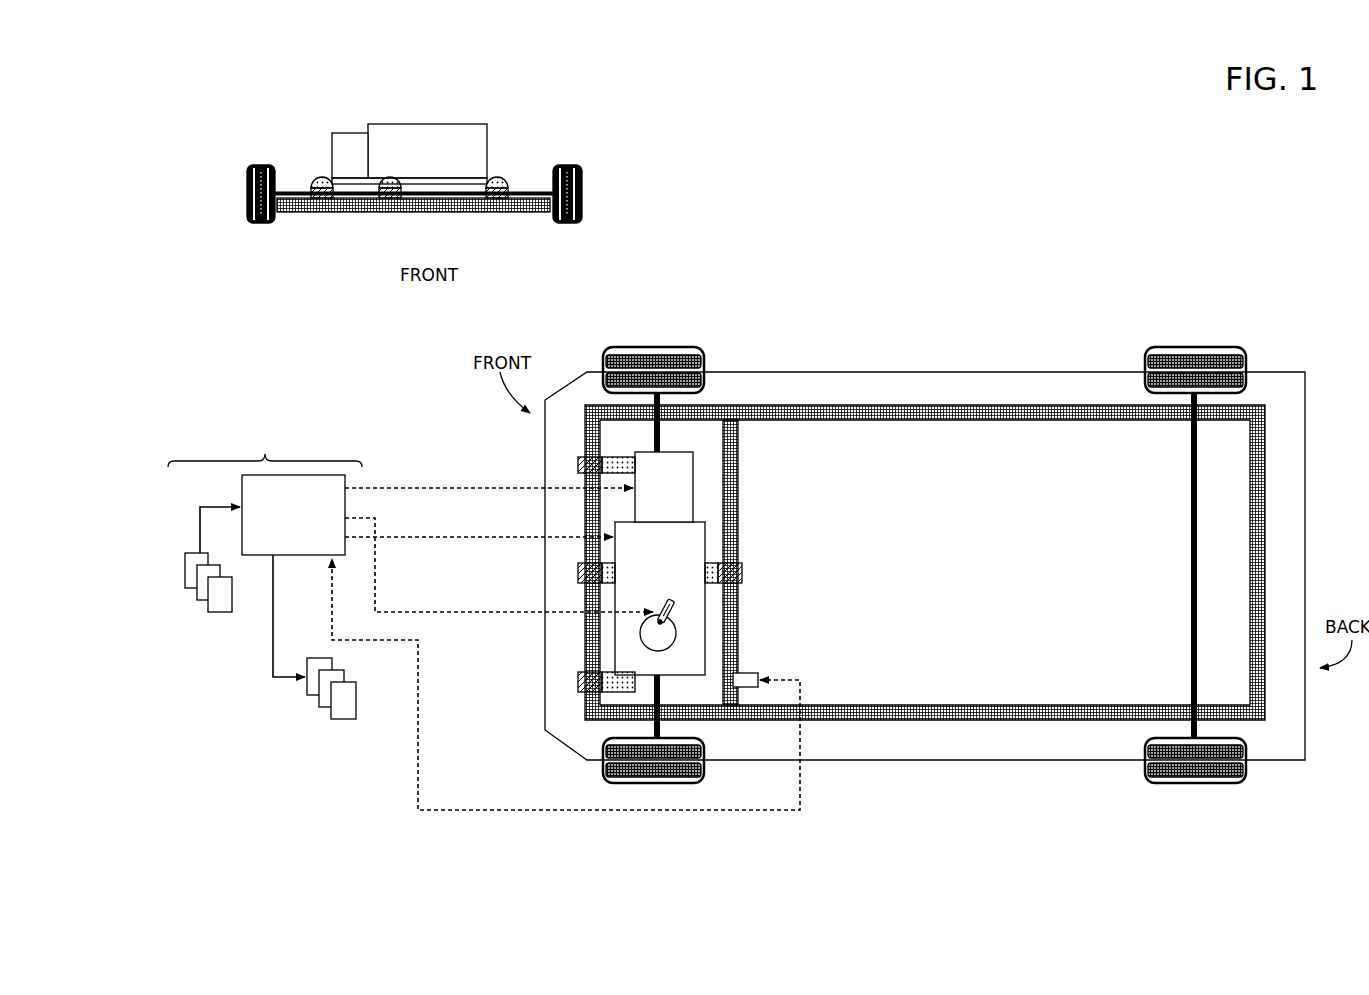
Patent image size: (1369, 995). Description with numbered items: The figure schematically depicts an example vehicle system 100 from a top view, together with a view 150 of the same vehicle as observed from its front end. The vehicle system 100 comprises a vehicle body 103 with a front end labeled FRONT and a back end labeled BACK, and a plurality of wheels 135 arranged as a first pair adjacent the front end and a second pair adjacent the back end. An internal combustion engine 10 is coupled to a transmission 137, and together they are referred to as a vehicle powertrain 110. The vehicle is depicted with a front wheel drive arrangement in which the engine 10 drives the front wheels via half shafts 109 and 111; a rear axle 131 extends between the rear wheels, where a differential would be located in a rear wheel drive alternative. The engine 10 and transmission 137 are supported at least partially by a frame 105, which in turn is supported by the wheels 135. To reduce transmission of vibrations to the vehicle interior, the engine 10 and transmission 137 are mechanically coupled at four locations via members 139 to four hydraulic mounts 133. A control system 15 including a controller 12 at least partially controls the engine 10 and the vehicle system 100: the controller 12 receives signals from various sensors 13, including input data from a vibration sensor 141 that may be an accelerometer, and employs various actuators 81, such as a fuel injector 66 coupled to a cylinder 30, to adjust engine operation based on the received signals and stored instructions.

The engine 10 is at (536, 399).
The controller 12 is at (293, 515).
The sensors 13 is at (208, 588).
The control system 15 is at (276, 601).
The cylinder 30 is at (673, 632).
The fuel injector 66 is at (666, 605).
The actuators 81 is at (329, 666).
The vehicle system 100 is at (1244, 248).
The vehicle body 103 is at (853, 372).
The frame 105 is at (280, 212).
The half shaft 109 is at (530, 193).
The vehicle powertrain 110 is at (714, 509).
The half shaft 111 is at (289, 193).
The rear axle 131 is at (1190, 545).
The hydraulic mounts 133 is at (318, 197).
The wheels 135 is at (260, 165).
The transmission 137 is at (350, 147).
The members 139 is at (322, 178).
The vibration sensor 141 is at (745, 673).
The view 150 is at (548, 72).